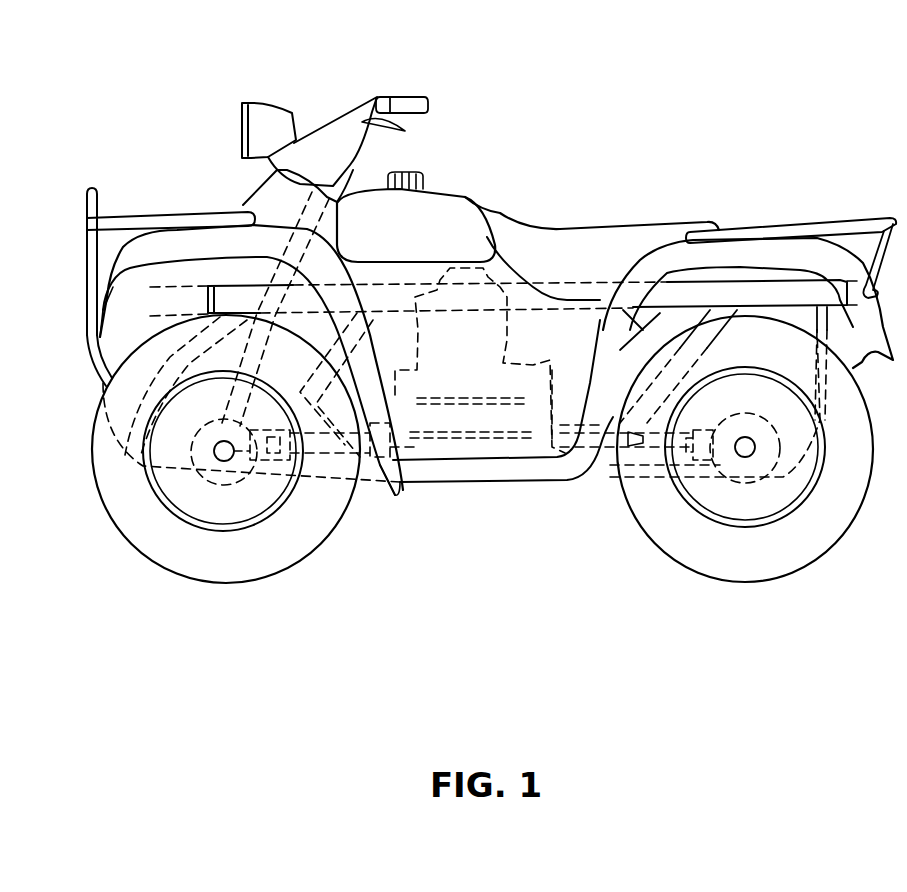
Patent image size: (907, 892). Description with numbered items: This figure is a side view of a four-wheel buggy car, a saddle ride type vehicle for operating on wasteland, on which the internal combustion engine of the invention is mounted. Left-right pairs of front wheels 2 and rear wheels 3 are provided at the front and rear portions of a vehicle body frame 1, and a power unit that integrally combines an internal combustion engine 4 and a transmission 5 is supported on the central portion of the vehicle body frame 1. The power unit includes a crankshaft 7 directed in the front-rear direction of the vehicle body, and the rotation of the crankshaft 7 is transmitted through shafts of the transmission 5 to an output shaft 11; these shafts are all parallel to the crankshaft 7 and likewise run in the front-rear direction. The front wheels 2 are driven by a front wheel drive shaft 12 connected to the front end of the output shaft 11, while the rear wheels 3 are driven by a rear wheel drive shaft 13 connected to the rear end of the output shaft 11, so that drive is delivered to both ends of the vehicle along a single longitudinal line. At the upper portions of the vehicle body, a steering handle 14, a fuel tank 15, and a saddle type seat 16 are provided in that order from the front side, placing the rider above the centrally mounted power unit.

The vehicle body frame 1 is at (733, 297).
The front wheels 2 is at (203, 573).
The rear wheels 3 is at (763, 560).
The internal combustion engine 4 is at (457, 323).
The transmission 5 is at (540, 363).
The crankshaft 7 is at (447, 404).
The output shaft 11 is at (499, 440).
The front wheel drive shaft 12 is at (316, 447).
The rear wheel drive shaft 13 is at (642, 438).
The steering handle 14 is at (403, 97).
The fuel tank 15 is at (442, 193).
The saddle type seat 16 is at (645, 230).